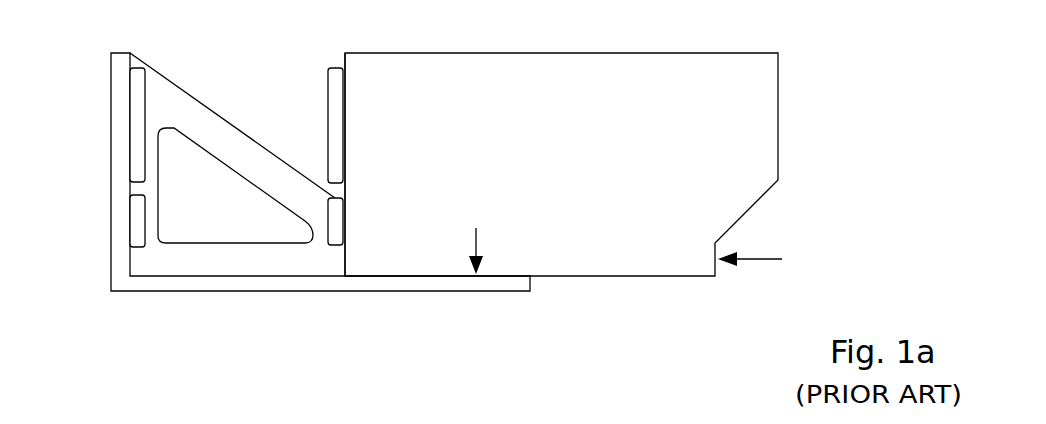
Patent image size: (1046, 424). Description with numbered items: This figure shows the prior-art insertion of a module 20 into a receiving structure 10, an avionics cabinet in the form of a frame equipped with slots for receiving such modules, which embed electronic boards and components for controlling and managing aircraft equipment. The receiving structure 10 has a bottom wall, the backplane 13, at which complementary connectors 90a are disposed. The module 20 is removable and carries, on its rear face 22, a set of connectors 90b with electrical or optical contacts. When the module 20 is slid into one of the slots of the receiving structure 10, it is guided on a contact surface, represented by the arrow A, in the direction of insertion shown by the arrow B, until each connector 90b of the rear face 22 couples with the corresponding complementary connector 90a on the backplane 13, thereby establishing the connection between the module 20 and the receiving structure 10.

The receiving structure 10 is at (70, 64).
The backplane 13 is at (123, 257).
The module 20 is at (628, 47).
The rear face 22 is at (342, 58).
The complementary connector 90a is at (143, 93).
The connector 90b is at (328, 78).